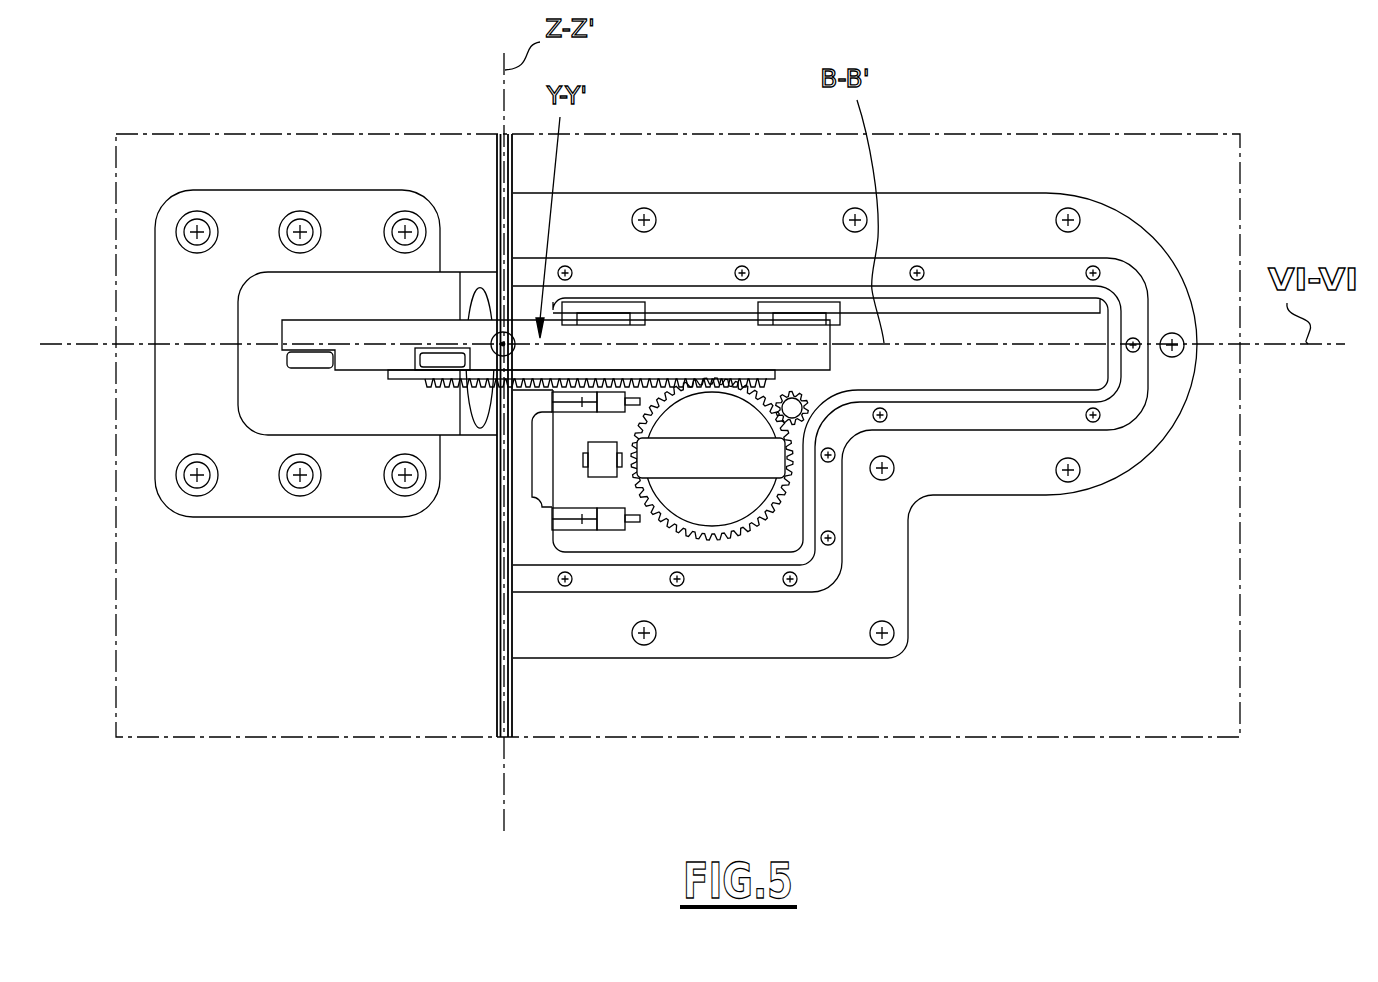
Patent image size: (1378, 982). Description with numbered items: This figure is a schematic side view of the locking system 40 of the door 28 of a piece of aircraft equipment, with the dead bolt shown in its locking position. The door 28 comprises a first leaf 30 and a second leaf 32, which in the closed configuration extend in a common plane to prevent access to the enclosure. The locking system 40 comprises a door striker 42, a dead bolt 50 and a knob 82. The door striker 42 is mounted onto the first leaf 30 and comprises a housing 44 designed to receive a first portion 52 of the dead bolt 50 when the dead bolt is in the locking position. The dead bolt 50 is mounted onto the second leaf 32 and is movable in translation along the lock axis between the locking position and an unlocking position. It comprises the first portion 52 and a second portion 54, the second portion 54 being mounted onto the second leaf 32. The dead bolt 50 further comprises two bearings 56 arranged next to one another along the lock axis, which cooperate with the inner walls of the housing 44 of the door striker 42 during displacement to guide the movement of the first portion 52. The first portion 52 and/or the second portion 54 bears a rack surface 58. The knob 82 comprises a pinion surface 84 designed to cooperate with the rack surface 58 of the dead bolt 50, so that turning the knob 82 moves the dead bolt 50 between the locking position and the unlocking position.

The door 28 is at (1108, 158).
The first leaf 30 is at (308, 160).
The second leaf 32 is at (968, 175).
The locking system 40 is at (670, 185).
The door striker 42 is at (472, 262).
The housing 44 is at (380, 297).
The dead bolt 50 is at (511, 335).
The first portion 52 is at (366, 355).
The second portion 54 is at (696, 330).
The bearing 56 is at (307, 362).
The rack surface 58 is at (538, 383).
The knob 82 is at (730, 462).
The pinion surface 84 is at (748, 530).